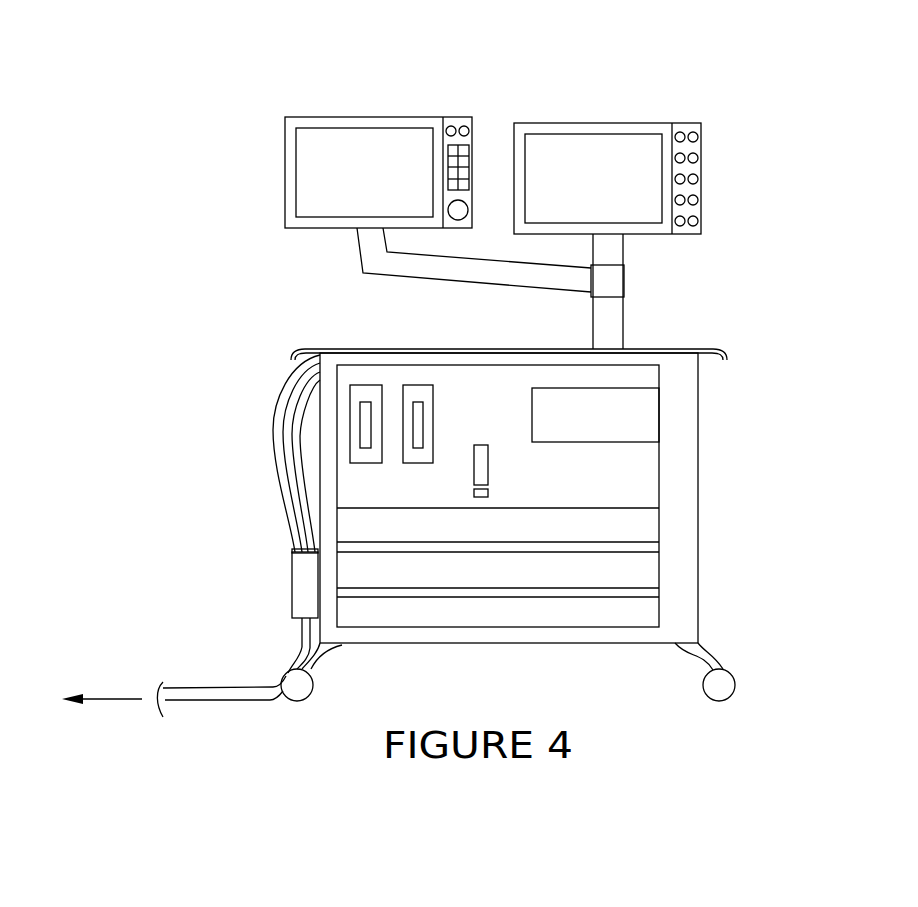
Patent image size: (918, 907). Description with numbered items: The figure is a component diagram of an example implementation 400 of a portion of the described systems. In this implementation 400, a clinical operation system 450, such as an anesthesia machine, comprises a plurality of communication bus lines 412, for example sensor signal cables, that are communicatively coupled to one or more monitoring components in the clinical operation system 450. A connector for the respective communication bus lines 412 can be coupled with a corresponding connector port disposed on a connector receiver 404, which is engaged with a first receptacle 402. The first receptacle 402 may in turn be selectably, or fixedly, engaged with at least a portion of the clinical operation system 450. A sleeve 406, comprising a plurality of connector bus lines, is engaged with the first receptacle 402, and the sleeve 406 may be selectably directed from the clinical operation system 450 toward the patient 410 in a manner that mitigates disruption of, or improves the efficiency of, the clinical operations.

The implementation 400 is at (718, 72).
The clinical operation system 450 is at (695, 338).
The communication bus lines 412 is at (262, 426).
The connector receiver 404 is at (292, 552).
The first receptacle 402 is at (292, 588).
The sleeve 406 is at (237, 687).
The patient 410 is at (143, 721).